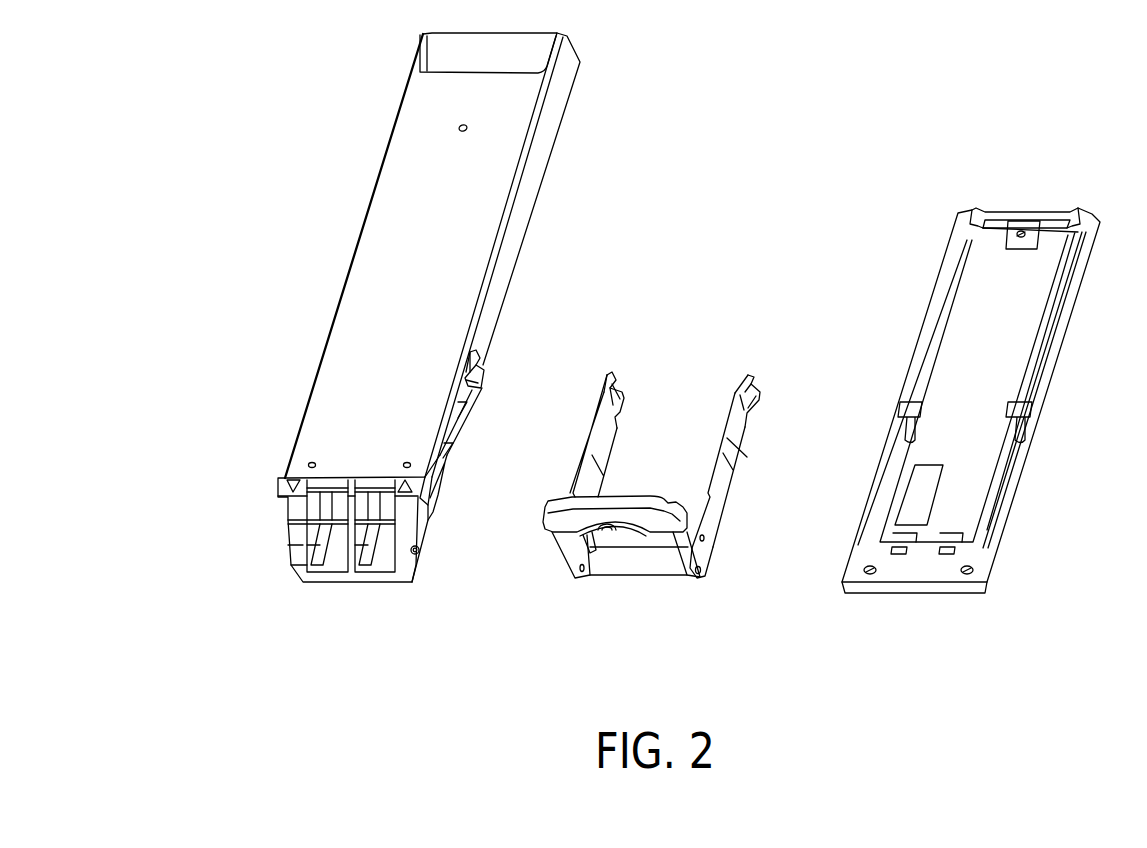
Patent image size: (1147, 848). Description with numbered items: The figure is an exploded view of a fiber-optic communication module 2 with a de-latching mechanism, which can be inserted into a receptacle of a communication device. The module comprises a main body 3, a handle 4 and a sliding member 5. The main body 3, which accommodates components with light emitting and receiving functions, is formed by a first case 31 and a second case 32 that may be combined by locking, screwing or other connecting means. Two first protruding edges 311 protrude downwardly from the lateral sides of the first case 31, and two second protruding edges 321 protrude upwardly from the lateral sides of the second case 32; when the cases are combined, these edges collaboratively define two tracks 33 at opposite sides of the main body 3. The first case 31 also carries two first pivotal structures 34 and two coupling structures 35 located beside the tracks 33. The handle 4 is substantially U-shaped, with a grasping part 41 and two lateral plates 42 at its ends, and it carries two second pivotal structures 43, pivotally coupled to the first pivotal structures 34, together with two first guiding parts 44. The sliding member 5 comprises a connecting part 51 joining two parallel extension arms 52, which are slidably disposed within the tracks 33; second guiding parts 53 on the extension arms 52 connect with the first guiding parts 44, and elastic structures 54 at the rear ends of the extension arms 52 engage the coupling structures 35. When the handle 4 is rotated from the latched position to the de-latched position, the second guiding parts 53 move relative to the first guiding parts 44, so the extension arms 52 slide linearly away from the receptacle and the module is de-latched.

The fiber-optic communication module 2 is at (228, 123).
The main body 3 is at (118, 434).
The first case 31 is at (370, 285).
The first protruding edges 311 is at (440, 458).
The second case 32 is at (1030, 416).
The second protruding edges 321 is at (1003, 510).
The tracks 33 is at (450, 433).
The first pivotal structures 34 is at (423, 553).
The coupling structures 35 is at (482, 375).
The handle 4 is at (743, 638).
The grasping part 41 is at (657, 520).
The lateral plates 42 is at (575, 552).
The second pivotal structures 43 is at (705, 567).
The first guiding parts 44 is at (587, 535).
The sliding member 5 is at (775, 337).
The connecting part 51 is at (643, 562).
The extension arms 52 is at (607, 432).
The second guiding parts 53 is at (598, 502).
The elastic structures 54 is at (733, 393).